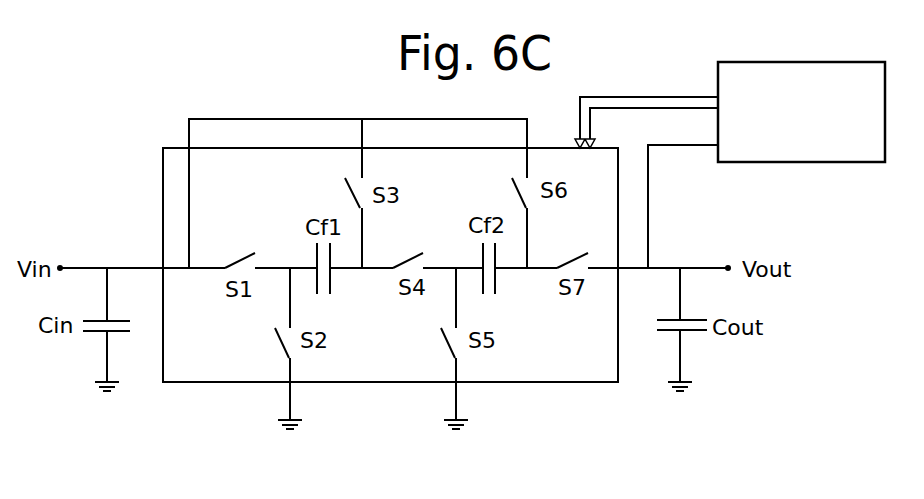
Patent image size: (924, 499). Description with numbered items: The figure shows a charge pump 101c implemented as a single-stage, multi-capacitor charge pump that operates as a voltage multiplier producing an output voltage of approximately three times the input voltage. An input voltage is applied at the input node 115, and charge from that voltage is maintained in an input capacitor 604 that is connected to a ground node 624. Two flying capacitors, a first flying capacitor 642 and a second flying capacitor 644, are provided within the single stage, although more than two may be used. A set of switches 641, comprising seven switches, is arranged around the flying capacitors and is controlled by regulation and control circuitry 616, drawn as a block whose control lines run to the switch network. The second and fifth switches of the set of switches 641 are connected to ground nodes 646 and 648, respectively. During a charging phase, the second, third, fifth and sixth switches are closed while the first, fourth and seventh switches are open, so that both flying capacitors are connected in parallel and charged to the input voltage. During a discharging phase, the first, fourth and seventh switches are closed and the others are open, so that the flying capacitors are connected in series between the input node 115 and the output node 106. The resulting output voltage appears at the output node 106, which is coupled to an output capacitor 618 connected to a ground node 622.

The charge pump 101c is at (606, 88).
The output node 106 is at (726, 264).
The input node 115 is at (63, 267).
The input capacitor Cin 604 is at (98, 336).
The regulation and control circuitry 616 is at (801, 112).
The output capacitor Cout 618 is at (670, 336).
The ground node 622 is at (697, 388).
The ground node 624 is at (97, 393).
The set of switches 641 is at (619, 149).
The flying capacitor Cf1 642 is at (313, 261).
The flying capacitor Cf2 644 is at (480, 261).
The ground node 646 is at (278, 436).
The ground node 648 is at (445, 435).